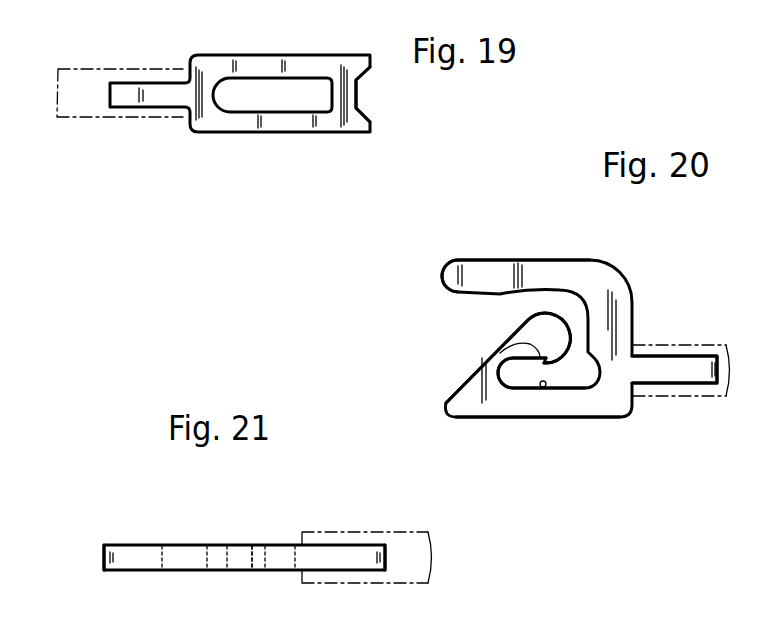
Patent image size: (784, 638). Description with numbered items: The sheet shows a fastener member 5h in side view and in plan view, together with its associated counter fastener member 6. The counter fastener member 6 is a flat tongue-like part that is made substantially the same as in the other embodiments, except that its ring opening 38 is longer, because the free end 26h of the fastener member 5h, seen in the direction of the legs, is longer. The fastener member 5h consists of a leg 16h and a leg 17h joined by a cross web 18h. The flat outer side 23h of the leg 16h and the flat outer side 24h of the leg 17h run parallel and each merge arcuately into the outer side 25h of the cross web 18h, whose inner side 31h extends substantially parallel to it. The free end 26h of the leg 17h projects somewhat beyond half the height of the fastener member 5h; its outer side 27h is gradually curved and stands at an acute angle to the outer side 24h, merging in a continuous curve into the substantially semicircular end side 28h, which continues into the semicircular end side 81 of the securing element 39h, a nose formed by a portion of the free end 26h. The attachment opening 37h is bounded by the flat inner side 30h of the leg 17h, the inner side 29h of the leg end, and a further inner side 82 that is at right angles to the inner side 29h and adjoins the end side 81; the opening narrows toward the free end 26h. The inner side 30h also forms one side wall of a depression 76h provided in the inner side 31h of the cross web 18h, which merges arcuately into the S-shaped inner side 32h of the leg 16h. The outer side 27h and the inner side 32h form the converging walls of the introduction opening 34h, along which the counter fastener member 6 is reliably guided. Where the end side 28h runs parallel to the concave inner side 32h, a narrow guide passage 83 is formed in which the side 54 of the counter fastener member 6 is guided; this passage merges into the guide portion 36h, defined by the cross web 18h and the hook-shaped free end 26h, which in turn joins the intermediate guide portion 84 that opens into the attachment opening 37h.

In FIG. 19, the counter fastener member 6 is at (290, 52).
In FIG. 19, the ring opening 38 is at (285, 100).
In FIG. 19, the side of the counter fastener member 54 is at (336, 99).
In FIG. 20, the fastener member 5h is at (632, 261).
In FIG. 21, the fastener member 5h is at (221, 541).
In FIG. 20, the leg 16h is at (472, 273).
In FIG. 20, the leg 17h is at (558, 402).
In FIG. 20, the cross web 18h is at (602, 280).
In FIG. 20, the outer side of leg 16h 23h is at (550, 260).
In FIG. 20, the outer side of leg 17h 24h is at (605, 420).
In FIG. 20, the outer side of the cross web 25h is at (633, 298).
In FIG. 20, the free end 26h is at (500, 353).
In FIG. 20, the outer side of the free end 27h is at (470, 365).
In FIG. 20, the end side 28h is at (523, 313).
In FIG. 20, the inner side of the leg end 29h is at (587, 322).
In FIG. 20, the inner side of the leg 30h is at (545, 388).
In FIG. 20, the inner side of the cross web 31h is at (580, 297).
In FIG. 20, the inner side of leg 16h 32h is at (457, 290).
In FIG. 20, the introduction opening 34h is at (507, 305).
In FIG. 20, the guide portion 36h is at (587, 322).
In FIG. 21, the guide portion 36h is at (237, 562).
In FIG. 20, the attachment opening 37h is at (517, 378).
In FIG. 20, the securing element 39h is at (552, 362).
In FIG. 20, the depression 76h is at (633, 410).
In FIG. 21, the depression 76h is at (128, 558).
In FIG. 20, the end side of the securing element 81 is at (530, 378).
In FIG. 20, the further inner side of the leg end 82 is at (515, 345).
In FIG. 20, the guide passage 83 is at (535, 302).
In FIG. 20, the intermediate guide portion 84 is at (598, 397).